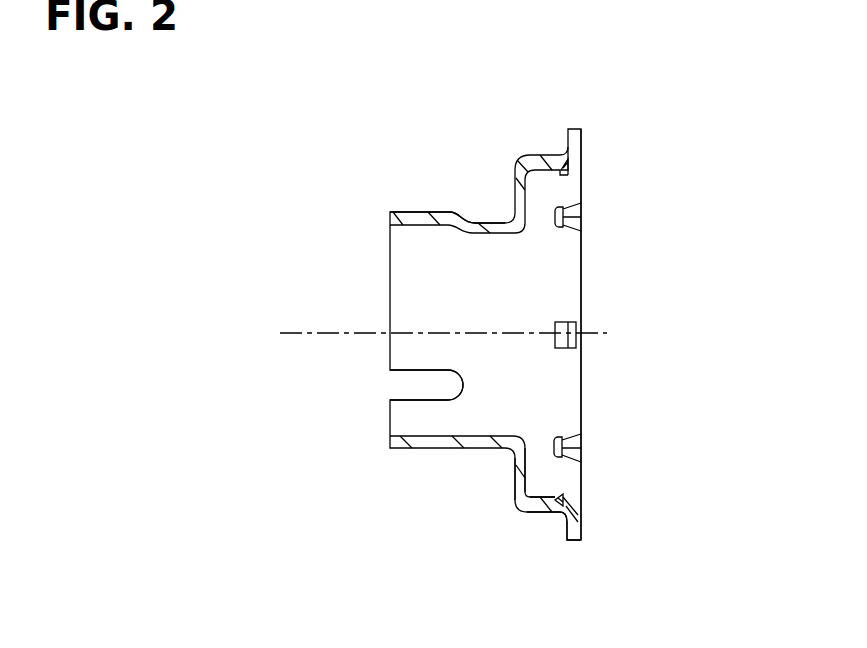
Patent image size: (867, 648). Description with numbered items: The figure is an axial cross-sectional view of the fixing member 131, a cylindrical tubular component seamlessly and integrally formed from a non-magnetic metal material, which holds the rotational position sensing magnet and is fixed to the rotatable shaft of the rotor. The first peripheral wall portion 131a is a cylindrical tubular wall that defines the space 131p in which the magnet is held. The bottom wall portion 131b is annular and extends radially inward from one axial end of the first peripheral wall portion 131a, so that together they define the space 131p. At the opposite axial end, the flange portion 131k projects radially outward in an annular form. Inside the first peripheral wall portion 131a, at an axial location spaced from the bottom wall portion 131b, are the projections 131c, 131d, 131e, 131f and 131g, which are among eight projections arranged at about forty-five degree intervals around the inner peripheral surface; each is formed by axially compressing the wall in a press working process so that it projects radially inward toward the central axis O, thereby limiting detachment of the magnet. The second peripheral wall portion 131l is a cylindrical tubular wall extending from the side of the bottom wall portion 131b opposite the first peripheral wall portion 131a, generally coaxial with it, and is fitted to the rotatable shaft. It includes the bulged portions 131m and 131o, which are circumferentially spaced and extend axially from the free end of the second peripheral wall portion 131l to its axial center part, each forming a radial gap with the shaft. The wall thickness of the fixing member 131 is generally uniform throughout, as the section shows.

The fixing member 131 is at (465, 113).
The first peripheral wall portion 131a is at (545, 507).
The bottom wall portion 131b is at (515, 480).
The projection 131c is at (563, 171).
The projection 131d is at (581, 208).
The projection 131e is at (562, 340).
The projection 131f is at (581, 454).
The projection 131g is at (563, 500).
The flange portion 131k is at (576, 532).
The second peripheral wall portion 131l is at (443, 443).
The bulged portion 131m is at (405, 228).
The bulged portion 131o is at (410, 382).
The space 131p is at (565, 384).
The central axis O is at (291, 335).